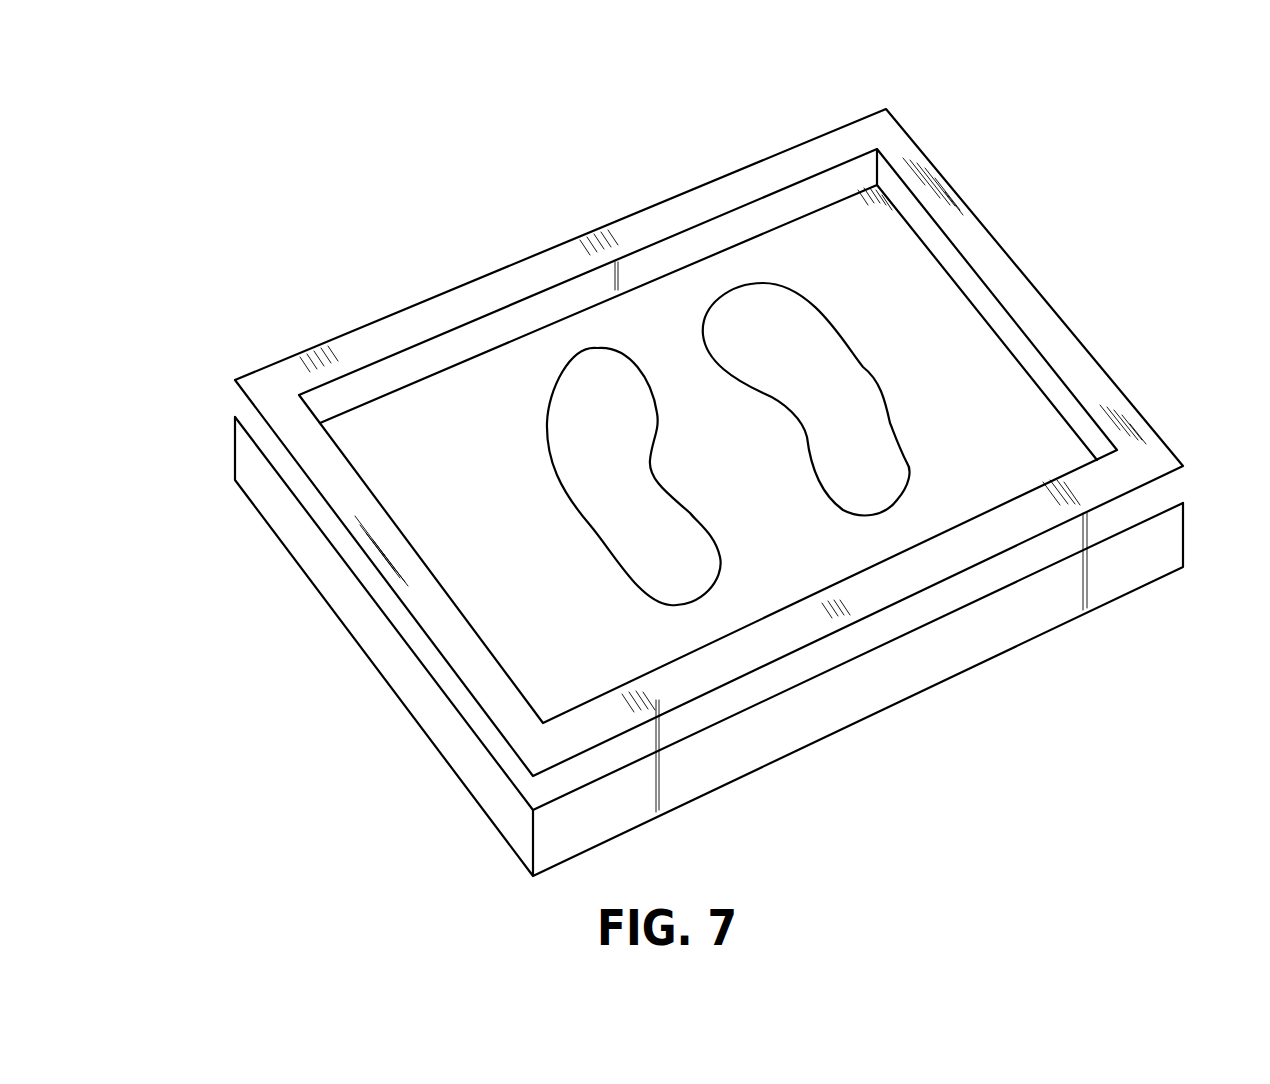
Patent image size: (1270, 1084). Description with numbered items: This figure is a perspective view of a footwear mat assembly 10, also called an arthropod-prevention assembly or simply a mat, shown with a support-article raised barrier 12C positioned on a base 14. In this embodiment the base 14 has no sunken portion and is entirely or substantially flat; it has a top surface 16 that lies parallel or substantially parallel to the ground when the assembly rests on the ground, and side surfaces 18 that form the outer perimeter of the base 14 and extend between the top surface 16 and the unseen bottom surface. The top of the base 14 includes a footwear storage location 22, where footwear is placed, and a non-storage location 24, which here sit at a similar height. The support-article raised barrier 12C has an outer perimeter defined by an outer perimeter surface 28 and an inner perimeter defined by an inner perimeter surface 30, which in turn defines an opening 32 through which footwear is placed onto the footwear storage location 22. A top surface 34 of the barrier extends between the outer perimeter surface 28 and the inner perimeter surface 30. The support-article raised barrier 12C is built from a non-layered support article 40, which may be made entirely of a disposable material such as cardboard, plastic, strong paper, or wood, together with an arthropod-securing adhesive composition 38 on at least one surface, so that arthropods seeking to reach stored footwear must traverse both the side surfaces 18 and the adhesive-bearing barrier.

The footwear mat assembly 10 is at (272, 129).
The support-article raised barrier 12C is at (935, 165).
The base 14 is at (888, 710).
The top surface 16 is at (428, 487).
The side surfaces 18 is at (1037, 623).
The footwear storage location 22 is at (586, 390).
The non-storage location 24 is at (926, 327).
The outer perimeter surface 28 is at (1030, 558).
The inner perimeter surface 30 is at (423, 355).
The opening 32 is at (1033, 415).
The top surface 34 is at (342, 352).
The arthropod-securing adhesive composition 38 is at (428, 600).
The non-layered support article 40 is at (278, 360).